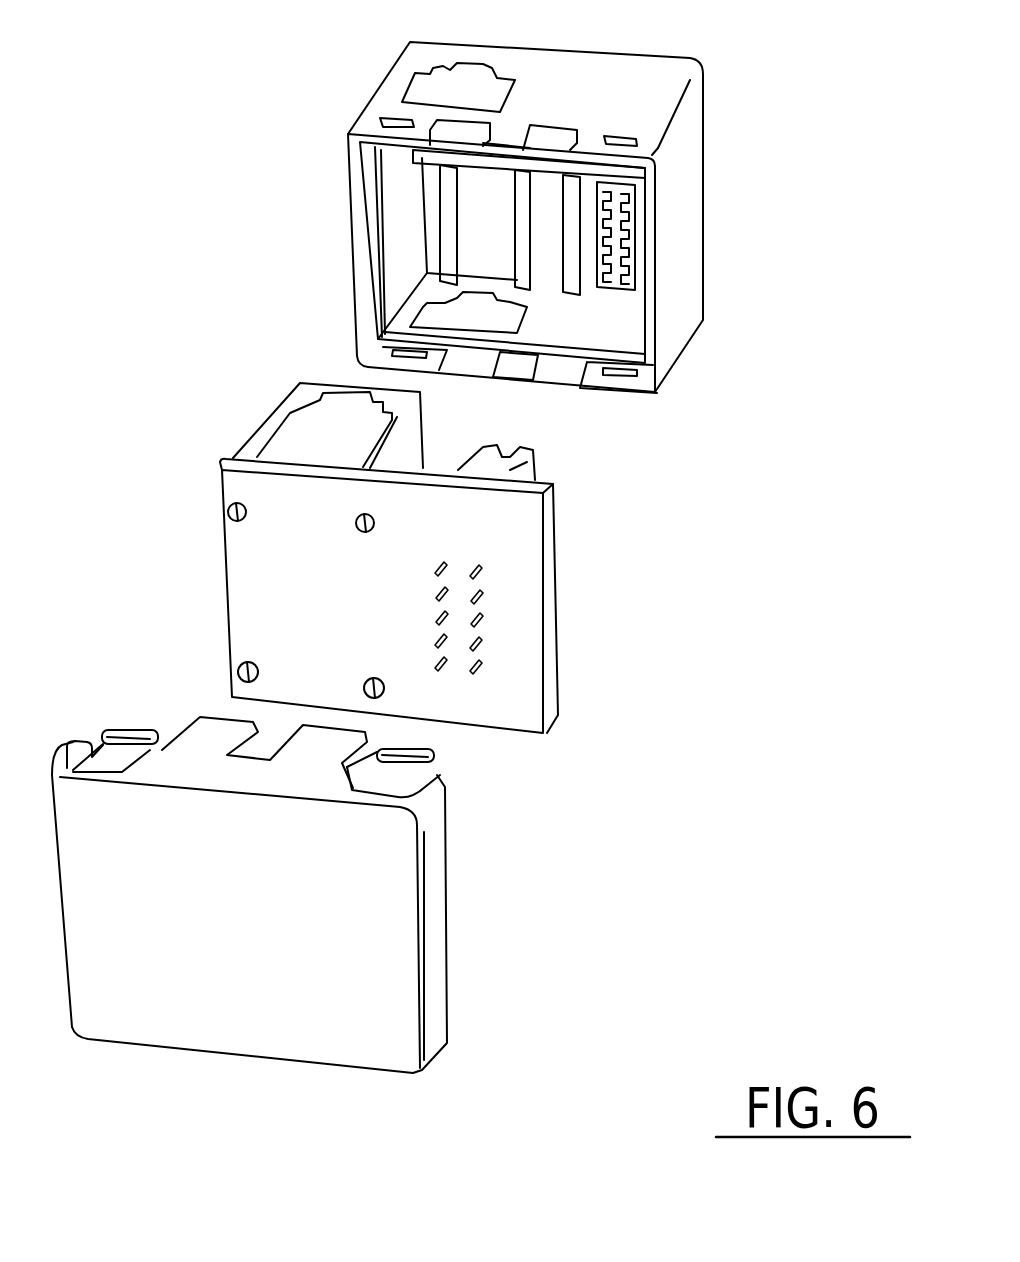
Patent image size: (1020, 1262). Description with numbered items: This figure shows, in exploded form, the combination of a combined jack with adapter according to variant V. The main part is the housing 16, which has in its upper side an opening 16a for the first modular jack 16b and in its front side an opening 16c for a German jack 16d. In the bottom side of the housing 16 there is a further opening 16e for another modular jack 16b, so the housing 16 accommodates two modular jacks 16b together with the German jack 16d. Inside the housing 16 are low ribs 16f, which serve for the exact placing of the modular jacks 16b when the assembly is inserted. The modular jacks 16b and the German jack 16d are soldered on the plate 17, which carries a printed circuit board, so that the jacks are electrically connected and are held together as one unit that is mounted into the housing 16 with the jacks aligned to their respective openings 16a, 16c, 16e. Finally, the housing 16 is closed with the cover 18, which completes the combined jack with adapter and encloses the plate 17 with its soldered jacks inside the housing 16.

The housing 16 is at (680, 313).
The opening 16a is at (443, 97).
The modular jack 16b is at (267, 428).
The opening 16c is at (633, 232).
The German jack 16d is at (537, 458).
The opening 16e is at (428, 326).
The low ribs 16f is at (523, 257).
The plate 17 is at (507, 643).
The cover 18 is at (432, 905).